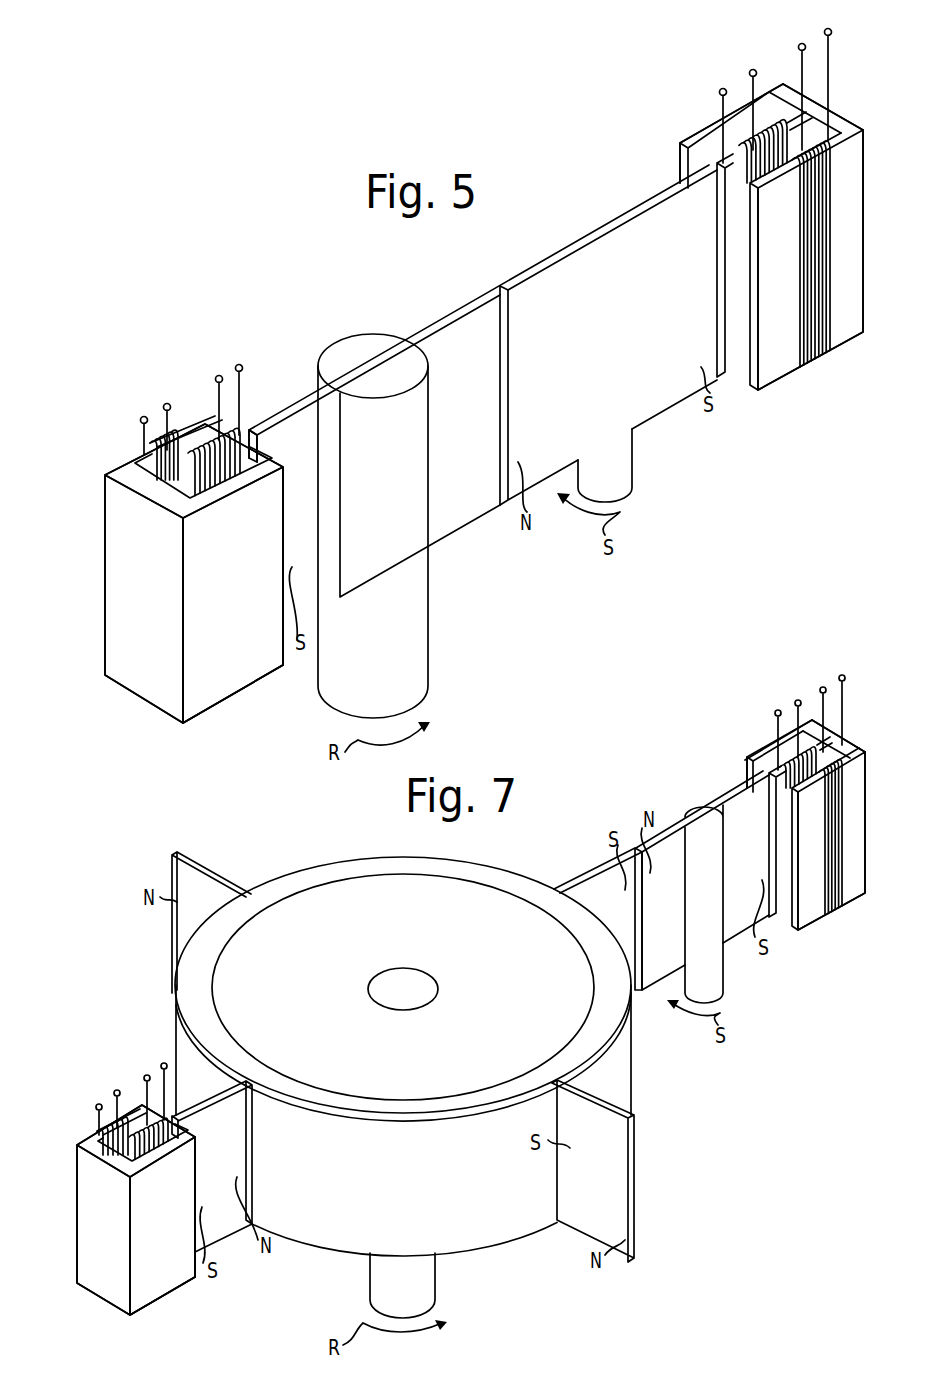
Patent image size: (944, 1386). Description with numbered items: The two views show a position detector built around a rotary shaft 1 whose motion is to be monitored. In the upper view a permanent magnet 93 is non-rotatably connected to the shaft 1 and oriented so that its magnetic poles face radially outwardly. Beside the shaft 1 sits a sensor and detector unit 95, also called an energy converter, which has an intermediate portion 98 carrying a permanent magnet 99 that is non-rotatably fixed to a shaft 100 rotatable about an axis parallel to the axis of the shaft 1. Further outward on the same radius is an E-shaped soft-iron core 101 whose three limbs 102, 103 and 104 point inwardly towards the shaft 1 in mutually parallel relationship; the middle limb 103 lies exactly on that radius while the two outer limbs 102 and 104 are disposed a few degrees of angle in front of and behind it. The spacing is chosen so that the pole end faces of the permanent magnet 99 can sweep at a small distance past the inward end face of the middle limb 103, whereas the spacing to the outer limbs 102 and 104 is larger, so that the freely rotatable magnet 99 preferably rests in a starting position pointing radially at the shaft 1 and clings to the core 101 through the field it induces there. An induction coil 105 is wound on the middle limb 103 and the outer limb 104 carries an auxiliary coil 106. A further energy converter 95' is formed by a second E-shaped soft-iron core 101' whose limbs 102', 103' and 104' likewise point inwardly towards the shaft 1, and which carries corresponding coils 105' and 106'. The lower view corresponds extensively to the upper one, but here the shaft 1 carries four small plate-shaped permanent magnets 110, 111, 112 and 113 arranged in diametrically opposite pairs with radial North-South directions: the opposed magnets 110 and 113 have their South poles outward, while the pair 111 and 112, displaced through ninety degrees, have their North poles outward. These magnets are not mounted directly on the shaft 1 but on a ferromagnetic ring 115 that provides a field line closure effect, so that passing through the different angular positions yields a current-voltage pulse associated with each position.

In FIG. 5, the shaft 1 is at (410, 620).
In FIG. 7, the shaft 1 is at (420, 989).
In FIG. 5, the permanent magnet 93 is at (452, 508).
In FIG. 5, the sensor and detector unit 95 is at (758, 325).
In FIG. 7, the sensor and detector unit 95 is at (802, 895).
In FIG. 5, the further energy converter 95' is at (201, 517).
In FIG. 7, the further energy converter 95' is at (136, 1140).
In FIG. 5, the intermediate portion 98 is at (580, 228).
In FIG. 7, the intermediate portion 98 is at (708, 767).
In FIG. 5, the permanent magnet 99 is at (660, 372).
In FIG. 7, the permanent magnet 99 is at (675, 857).
In FIG. 5, the shaft 100 is at (632, 470).
In FIG. 7, the shaft 100 is at (710, 980).
In FIG. 5, the E-shaped soft-iron core 101 is at (832, 105).
In FIG. 7, the E-shaped soft-iron core 101 is at (854, 725).
In FIG. 5, the E-shaped soft-iron core 101' is at (164, 573).
In FIG. 7, the E-shaped soft-iron core 101' is at (108, 1210).
In FIG. 5, the outer limb 102 is at (715, 135).
In FIG. 7, the outer limb 102 is at (764, 745).
In FIG. 5, the limb 102' is at (237, 598).
In FIG. 7, the limb 102' is at (176, 1233).
In FIG. 5, the middle limb 103 is at (764, 269).
In FIG. 7, the middle limb 103 is at (800, 851).
In FIG. 5, the limb 103' is at (289, 446).
In FIG. 7, the limb 103' is at (207, 1131).
In FIG. 5, the outer limb 104 is at (823, 260).
In FIG. 7, the outer limb 104 is at (850, 842).
In FIG. 5, the limb 104' is at (183, 398).
In FIG. 7, the limb 104' is at (119, 1087).
In FIG. 5, the induction coil 105 is at (757, 100).
In FIG. 7, the induction coil 105 is at (795, 719).
In FIG. 5, the coil 105' is at (227, 457).
In FIG. 7, the coil 105' is at (158, 1140).
In FIG. 5, the auxiliary coil 106 is at (849, 198).
In FIG. 7, the auxiliary coil 106 is at (865, 795).
In FIG. 5, the coil 106' is at (128, 442).
In FIG. 7, the coil 106' is at (84, 1122).
In FIG. 7, the permanent magnet 110 is at (598, 907).
In FIG. 7, the permanent magnet 111 is at (622, 1143).
In FIG. 7, the permanent magnet 112 is at (210, 888).
In FIG. 7, the permanent magnet 113 is at (230, 1227).
In FIG. 7, the ferromagnetic ring 115 is at (348, 870).